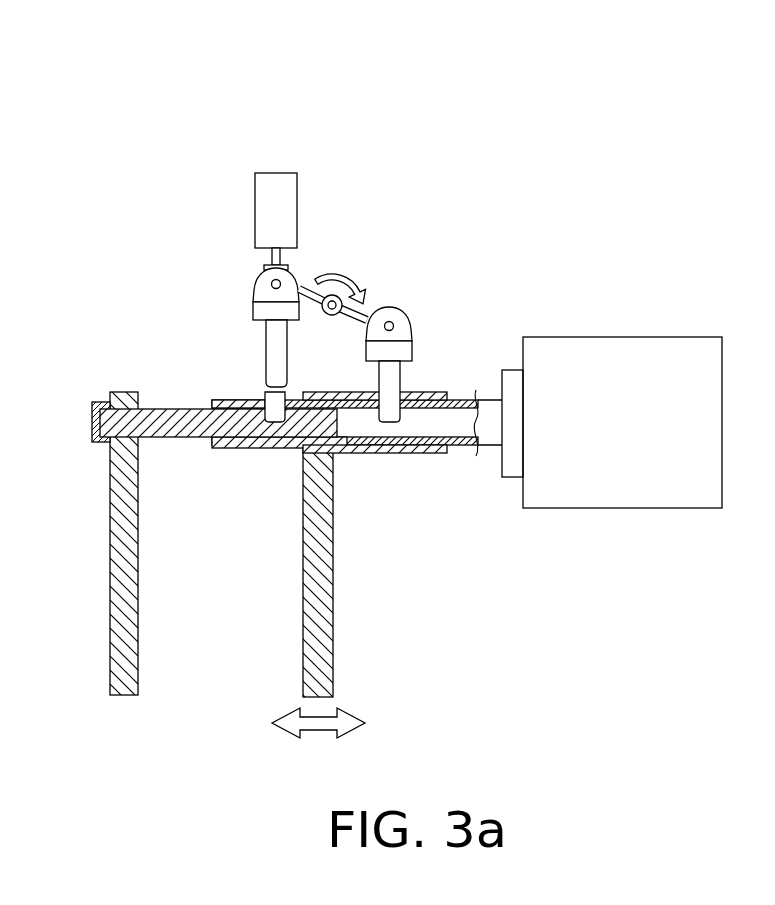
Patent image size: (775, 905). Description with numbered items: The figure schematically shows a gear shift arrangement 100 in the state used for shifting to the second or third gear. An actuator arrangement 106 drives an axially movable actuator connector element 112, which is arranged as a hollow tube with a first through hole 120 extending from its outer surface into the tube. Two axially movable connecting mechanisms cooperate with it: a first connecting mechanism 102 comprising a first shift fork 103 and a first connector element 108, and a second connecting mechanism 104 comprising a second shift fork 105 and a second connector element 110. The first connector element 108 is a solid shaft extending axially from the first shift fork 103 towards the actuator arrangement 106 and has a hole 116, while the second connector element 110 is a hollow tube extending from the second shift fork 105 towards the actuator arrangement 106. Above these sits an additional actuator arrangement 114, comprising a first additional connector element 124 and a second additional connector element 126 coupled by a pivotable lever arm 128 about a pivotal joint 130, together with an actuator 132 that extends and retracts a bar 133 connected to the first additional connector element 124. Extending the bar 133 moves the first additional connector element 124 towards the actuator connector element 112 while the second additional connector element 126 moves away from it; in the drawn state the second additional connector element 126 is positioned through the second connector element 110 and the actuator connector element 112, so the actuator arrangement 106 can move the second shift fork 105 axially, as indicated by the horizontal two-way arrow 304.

The gear shift arrangement 100 is at (181, 116).
The first connecting mechanism 102 is at (179, 642).
The first shift fork 103 is at (122, 618).
The second connecting mechanism 104 is at (372, 642).
The second shift fork 105 is at (317, 614).
The actuator arrangement 106 is at (625, 337).
The first connector element 108 is at (177, 425).
The second connector element 110 is at (407, 452).
The actuator connector element 112 is at (456, 398).
The additional actuator arrangement 114 is at (436, 191).
The hole 116 is at (262, 446).
The first through hole 120 is at (272, 404).
The first additional connector element 124 is at (266, 347).
The second additional connector element 126 is at (418, 338).
The pivotable lever arm 128 is at (364, 316).
The pivotal joint 130 is at (336, 294).
The actuator 132 is at (282, 173).
The bar 133 is at (270, 256).
The horizontal two-way arrow 304 is at (317, 722).